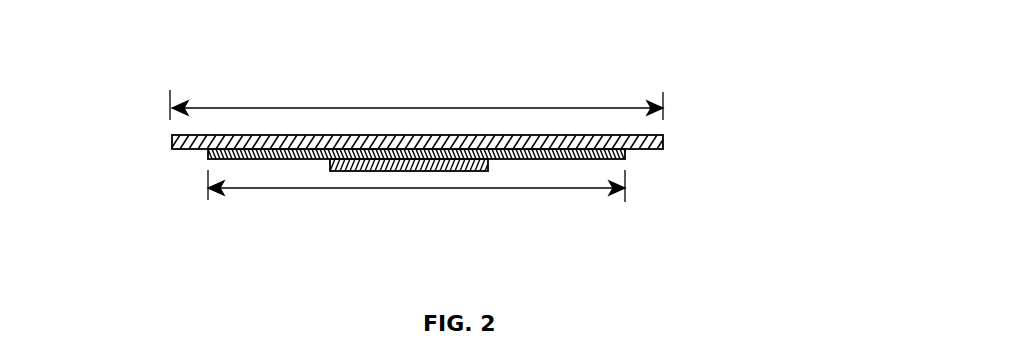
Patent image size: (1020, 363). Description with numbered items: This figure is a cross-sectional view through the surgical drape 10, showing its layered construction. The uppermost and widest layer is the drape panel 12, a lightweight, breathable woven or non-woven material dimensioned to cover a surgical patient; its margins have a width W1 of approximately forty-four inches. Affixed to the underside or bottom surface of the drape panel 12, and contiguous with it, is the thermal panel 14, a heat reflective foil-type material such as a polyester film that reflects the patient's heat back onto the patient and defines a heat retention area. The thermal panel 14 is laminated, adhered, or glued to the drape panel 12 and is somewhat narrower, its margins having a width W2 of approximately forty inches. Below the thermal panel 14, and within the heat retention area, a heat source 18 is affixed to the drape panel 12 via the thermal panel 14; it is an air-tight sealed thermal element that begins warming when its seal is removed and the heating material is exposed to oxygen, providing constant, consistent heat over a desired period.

The surgical drape 10 is at (695, 143).
The drape panel 12 is at (160, 148).
The thermal panel 14 is at (208, 152).
The heat source 18 is at (477, 170).
The width of margins 12a, 12b W1 is at (510, 109).
The width of margins 14a, 14b W2 is at (290, 188).